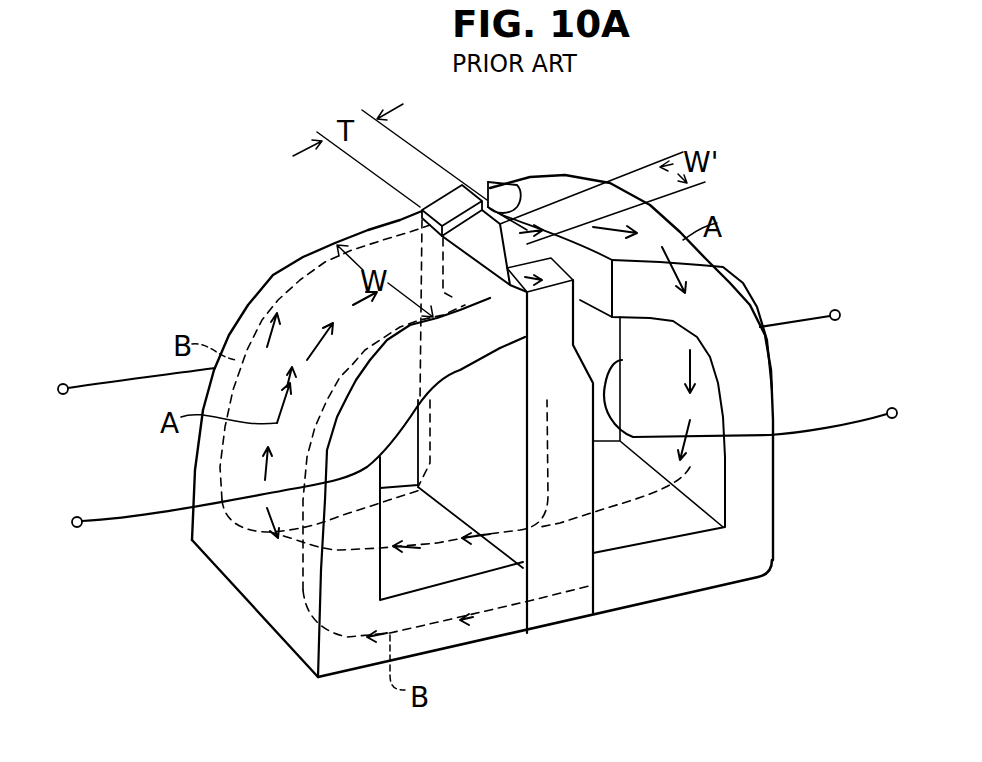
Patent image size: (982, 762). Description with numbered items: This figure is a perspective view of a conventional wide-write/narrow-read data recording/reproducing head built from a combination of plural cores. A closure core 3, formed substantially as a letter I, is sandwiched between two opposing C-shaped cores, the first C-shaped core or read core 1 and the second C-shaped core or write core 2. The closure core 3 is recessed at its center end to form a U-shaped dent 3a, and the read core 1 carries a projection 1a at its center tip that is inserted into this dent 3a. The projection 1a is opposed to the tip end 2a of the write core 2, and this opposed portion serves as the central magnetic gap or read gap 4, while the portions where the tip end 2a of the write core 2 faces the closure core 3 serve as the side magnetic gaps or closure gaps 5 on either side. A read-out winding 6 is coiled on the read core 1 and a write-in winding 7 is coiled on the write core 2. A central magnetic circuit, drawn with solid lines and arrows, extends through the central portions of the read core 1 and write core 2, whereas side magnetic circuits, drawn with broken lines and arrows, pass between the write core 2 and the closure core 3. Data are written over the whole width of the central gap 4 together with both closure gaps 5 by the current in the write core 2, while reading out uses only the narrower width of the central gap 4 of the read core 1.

The first C-shaped core (read core) 1 is at (726, 309).
The projection 1a is at (513, 270).
The second C-shaped core (write core) 2 is at (250, 315).
The tip end 2a is at (403, 223).
The closure core 3 is at (562, 600).
The dent 3a is at (473, 222).
The central magnetic gap (read gap) 4 is at (478, 226).
The side magnetic gaps (closure gaps) 5 is at (437, 215).
The read-out winding 6 is at (828, 430).
The write-in winding 7 is at (158, 516).